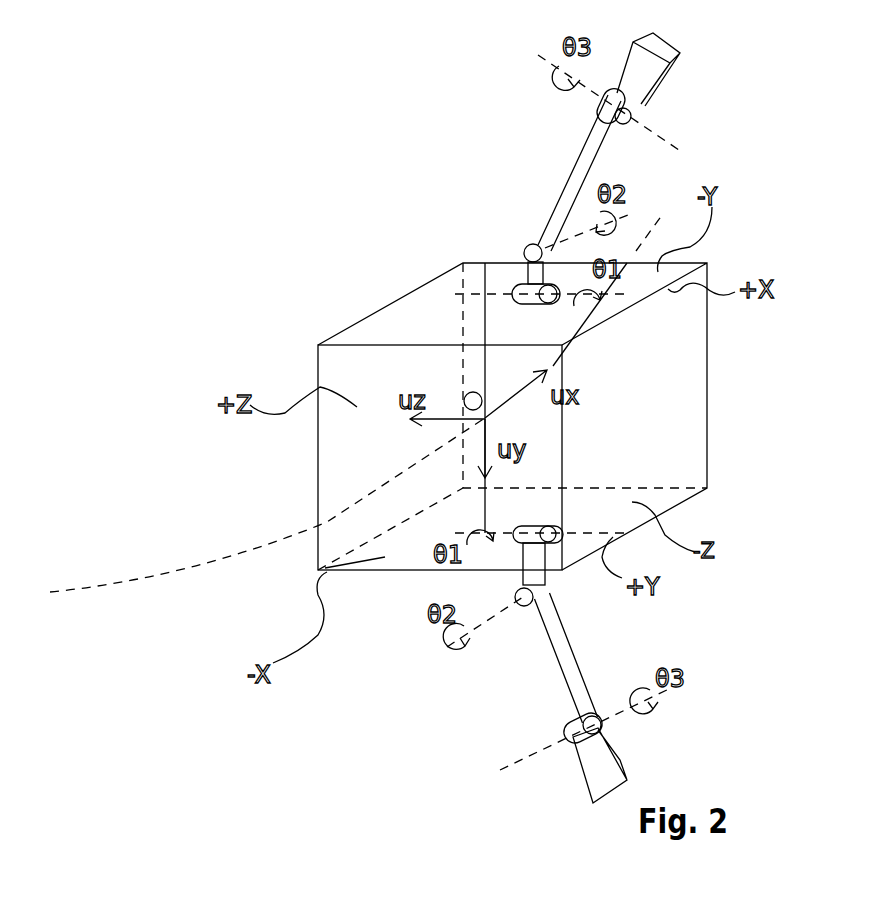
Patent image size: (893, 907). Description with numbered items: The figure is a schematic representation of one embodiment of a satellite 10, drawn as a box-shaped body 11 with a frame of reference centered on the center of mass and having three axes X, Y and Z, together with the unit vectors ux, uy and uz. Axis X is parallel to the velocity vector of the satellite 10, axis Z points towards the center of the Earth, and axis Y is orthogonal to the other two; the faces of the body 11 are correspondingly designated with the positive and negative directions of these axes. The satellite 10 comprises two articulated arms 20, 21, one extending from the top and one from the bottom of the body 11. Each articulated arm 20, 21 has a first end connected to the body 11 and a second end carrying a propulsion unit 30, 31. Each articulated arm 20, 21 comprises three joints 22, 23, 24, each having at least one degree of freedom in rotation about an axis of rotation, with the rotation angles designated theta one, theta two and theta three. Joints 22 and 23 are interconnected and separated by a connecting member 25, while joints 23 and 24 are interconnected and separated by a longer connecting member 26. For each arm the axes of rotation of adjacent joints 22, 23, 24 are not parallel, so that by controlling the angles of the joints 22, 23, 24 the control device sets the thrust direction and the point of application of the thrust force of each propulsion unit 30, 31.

The satellite 10 is at (304, 160).
The body 11 is at (360, 330).
The articulated arm 20 is at (539, 651).
The articulated arm 21 is at (586, 420).
The joint 22 is at (511, 288).
The joint 23 is at (527, 248).
The joint 24 is at (634, 109).
The connecting member 25 is at (560, 247).
The connecting member 26 is at (586, 150).
The propulsion unit 30 is at (627, 760).
The propulsion unit 31 is at (667, 60).